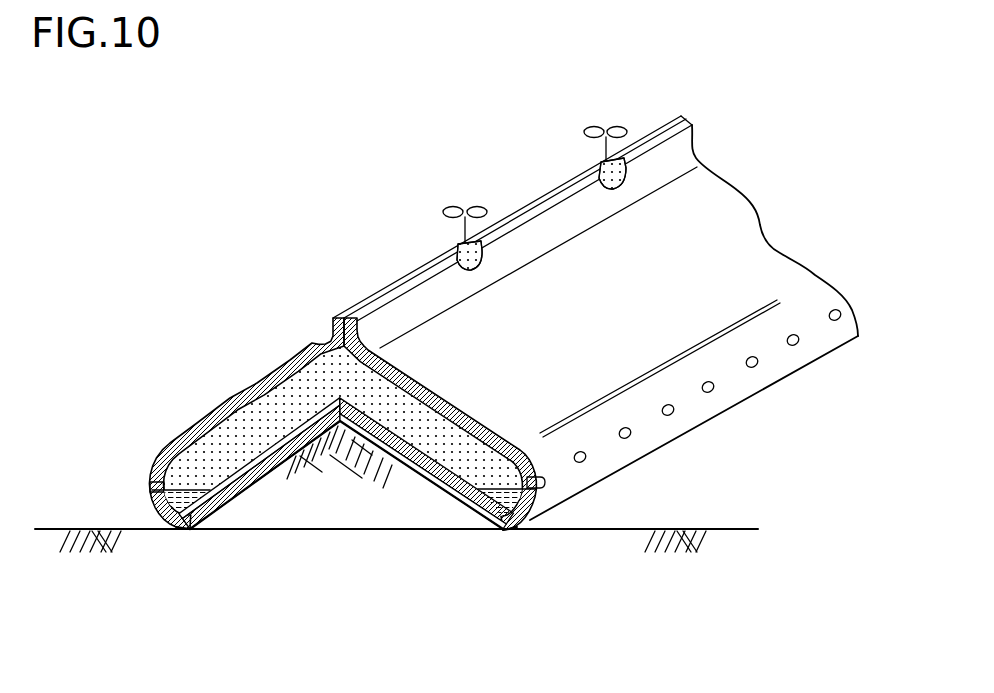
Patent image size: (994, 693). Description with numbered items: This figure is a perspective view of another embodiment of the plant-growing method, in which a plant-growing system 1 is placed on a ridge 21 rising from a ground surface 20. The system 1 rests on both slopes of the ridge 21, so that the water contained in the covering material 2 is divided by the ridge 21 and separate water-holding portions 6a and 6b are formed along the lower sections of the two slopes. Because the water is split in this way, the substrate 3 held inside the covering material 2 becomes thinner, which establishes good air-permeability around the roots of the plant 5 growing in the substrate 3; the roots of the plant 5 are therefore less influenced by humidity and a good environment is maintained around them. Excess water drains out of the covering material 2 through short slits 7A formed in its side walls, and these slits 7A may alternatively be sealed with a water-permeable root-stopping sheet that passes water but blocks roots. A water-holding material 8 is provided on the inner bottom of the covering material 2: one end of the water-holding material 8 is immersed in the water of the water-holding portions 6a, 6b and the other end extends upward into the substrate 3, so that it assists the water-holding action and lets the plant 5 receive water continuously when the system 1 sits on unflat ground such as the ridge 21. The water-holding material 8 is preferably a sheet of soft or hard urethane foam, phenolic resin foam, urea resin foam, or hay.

The plant-growing system 1 is at (480, 106).
The covering material 2 is at (730, 203).
The substrate 3 is at (255, 413).
The plant 5 is at (452, 210).
The water-holding portion 6a is at (505, 532).
The water-holding portion 6b is at (180, 532).
The short slit 7A is at (670, 412).
The water-holding material 8 is at (427, 482).
The ground surface 20 is at (118, 565).
The ridge 21 is at (335, 484).